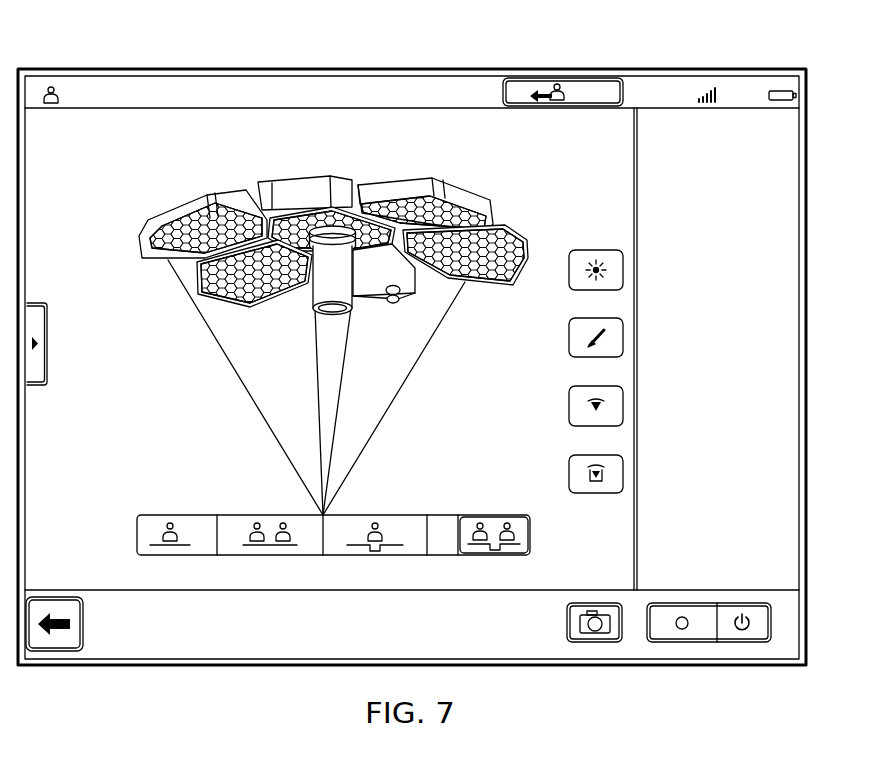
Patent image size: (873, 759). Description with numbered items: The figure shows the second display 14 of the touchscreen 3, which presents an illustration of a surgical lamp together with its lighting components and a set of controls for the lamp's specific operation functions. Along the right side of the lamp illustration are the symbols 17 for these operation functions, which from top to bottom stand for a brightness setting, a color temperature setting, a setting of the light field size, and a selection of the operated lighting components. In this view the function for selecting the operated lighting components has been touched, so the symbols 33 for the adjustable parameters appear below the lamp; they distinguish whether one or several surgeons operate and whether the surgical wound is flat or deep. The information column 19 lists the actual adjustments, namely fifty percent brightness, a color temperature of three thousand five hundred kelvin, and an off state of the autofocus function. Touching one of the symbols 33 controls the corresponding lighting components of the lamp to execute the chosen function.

The touchscreen 3 is at (94, 30).
The second display 14 is at (476, 64).
The information column 19 is at (668, 137).
The symbols for specific operation functions 17 is at (592, 250).
The symbols for adjustable parameters 33 is at (157, 522).